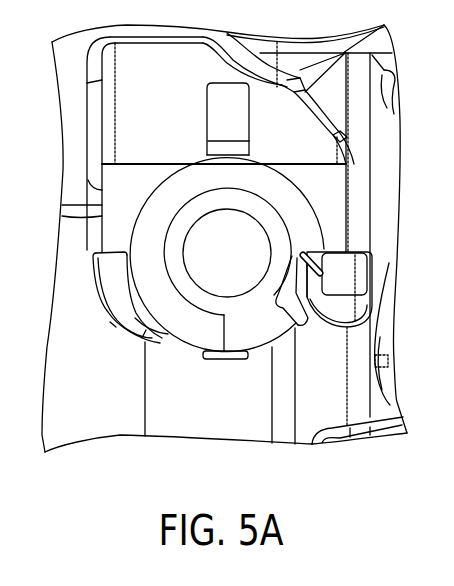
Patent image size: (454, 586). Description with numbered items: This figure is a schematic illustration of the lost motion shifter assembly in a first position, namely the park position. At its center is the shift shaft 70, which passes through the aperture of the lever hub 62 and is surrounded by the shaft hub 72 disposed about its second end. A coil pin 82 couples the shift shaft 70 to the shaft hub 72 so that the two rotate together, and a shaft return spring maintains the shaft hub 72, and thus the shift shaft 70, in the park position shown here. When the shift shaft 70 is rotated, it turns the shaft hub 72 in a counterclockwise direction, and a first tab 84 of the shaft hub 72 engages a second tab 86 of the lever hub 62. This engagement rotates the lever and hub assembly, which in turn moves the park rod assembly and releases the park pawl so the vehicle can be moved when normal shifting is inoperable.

The lever hub 62 is at (187, 214).
The shift shaft 70 is at (220, 265).
The shaft hub 72 is at (155, 248).
The coil pin 82 is at (224, 112).
The first tab 84 is at (187, 330).
The second tab 86 is at (270, 321).